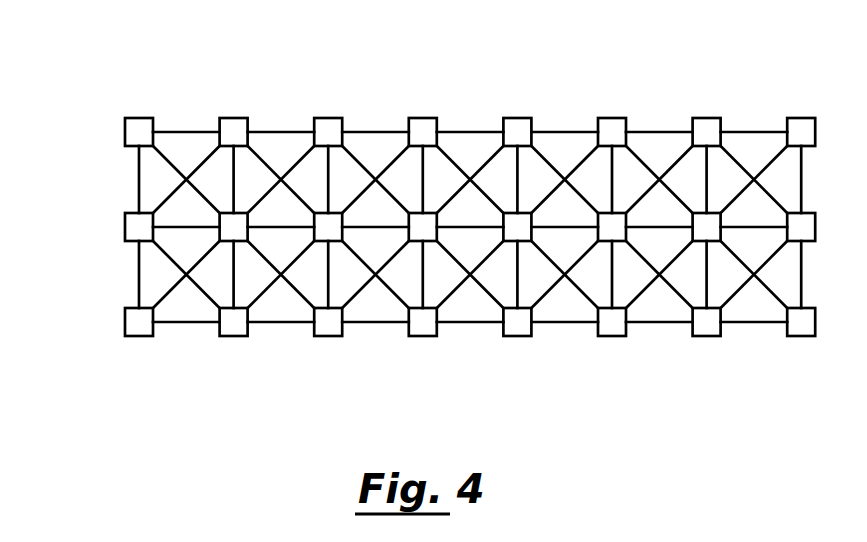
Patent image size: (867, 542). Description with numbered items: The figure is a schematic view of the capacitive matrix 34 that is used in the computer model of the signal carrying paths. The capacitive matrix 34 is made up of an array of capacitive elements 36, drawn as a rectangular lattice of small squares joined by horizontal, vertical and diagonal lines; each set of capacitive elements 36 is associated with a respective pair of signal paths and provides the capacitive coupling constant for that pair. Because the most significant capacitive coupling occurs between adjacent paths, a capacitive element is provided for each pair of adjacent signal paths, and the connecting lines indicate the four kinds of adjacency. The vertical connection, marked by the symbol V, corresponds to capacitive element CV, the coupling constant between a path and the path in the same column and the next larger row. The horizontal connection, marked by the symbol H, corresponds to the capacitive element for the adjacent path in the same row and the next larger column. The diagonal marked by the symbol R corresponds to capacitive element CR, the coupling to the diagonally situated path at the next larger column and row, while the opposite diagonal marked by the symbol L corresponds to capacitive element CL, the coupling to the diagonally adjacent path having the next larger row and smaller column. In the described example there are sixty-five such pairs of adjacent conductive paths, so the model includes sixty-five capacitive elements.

The capacitive matrix 34 is at (96, 327).
The capacitive element 36 is at (309, 328).
The symbol L is at (391, 199).
The symbol V is at (424, 172).
The symbol R is at (486, 156).
The symbol H is at (491, 197).
The capacitive element CV is at (426, 233).
The capacitive element CR is at (422, 274).
The capacitive element CL is at (422, 274).